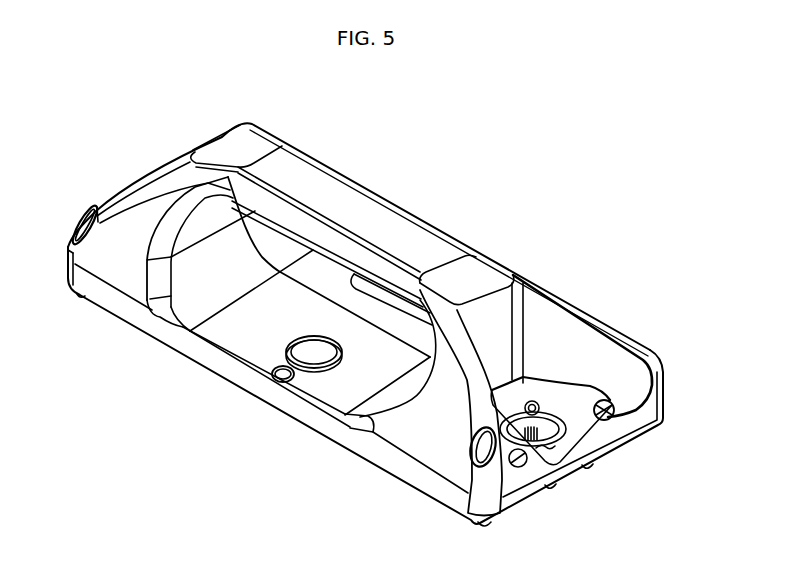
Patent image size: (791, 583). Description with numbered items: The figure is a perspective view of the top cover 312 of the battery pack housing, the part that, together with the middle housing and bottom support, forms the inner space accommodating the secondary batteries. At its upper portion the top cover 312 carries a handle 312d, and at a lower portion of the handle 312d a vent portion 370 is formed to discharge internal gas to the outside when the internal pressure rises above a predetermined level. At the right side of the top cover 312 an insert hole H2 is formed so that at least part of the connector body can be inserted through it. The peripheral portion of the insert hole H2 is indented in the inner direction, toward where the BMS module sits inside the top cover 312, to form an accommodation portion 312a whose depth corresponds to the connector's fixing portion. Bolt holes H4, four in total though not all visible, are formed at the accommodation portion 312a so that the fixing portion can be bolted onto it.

The top cover 312 is at (365, 324).
The handle 312d is at (345, 193).
The accommodation portion 312a is at (523, 395).
The bolt hole H4 is at (531, 398).
The insert hole H2 is at (542, 445).
The vent portion 370 is at (312, 369).